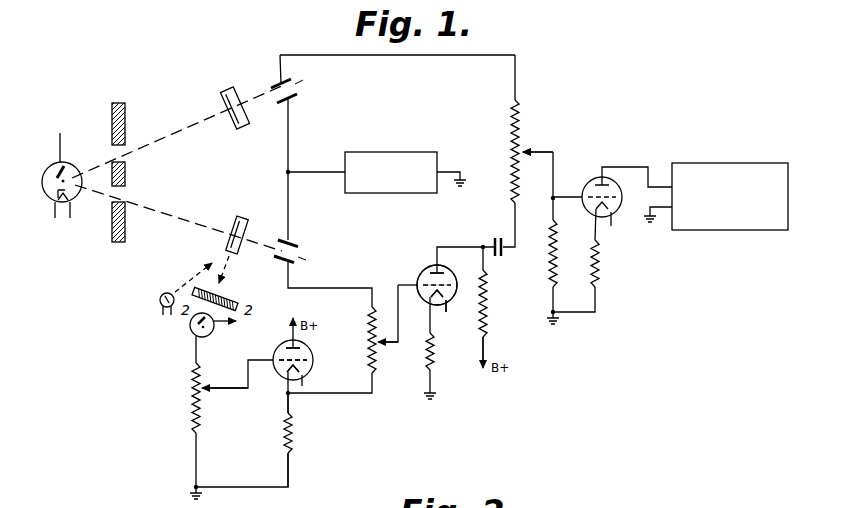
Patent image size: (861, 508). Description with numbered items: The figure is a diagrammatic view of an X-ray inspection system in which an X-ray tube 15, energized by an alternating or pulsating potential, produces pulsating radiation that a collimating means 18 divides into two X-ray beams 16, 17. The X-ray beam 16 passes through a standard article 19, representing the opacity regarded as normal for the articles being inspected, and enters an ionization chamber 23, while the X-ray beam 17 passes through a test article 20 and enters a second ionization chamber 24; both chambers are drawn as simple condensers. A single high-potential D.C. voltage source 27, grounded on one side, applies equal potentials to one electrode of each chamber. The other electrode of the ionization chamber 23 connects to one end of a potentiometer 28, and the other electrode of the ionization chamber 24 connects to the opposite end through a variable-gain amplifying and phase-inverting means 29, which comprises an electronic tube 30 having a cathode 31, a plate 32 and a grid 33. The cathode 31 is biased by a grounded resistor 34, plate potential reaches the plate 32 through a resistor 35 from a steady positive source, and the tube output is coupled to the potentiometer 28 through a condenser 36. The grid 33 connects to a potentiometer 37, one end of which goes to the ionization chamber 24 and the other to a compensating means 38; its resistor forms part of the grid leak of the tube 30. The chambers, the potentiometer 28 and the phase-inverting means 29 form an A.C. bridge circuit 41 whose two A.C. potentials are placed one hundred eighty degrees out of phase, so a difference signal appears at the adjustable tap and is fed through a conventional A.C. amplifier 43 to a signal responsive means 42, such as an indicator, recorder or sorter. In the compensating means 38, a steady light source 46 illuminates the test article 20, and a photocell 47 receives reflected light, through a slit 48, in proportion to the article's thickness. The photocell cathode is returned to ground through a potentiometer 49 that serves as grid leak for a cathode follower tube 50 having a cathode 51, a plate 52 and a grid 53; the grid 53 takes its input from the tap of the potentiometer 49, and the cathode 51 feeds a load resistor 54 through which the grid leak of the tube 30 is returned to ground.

The X-ray tube 15 is at (72, 170).
The X-ray beam 16 is at (174, 130).
The X-ray beam 17 is at (177, 212).
The collimating means 18 is at (117, 103).
The standard article 19 is at (231, 92).
The test article 20 is at (240, 220).
The ionization chamber 23 is at (292, 97).
The ionization chamber 24 is at (294, 242).
The voltage source 27 is at (417, 152).
The potentiometer 28 is at (516, 146).
The variable-gain amplifying and phase-inverting means 29 is at (426, 256).
The electronic tube 30 is at (421, 274).
The cathode 31 is at (425, 301).
The anode or plate 32 is at (447, 273).
The grid 33 is at (446, 301).
The resistor 34 is at (436, 356).
The resistor 35 is at (488, 302).
The condenser 36 is at (498, 238).
The potentiometer 37 is at (377, 353).
The compensating means 38 is at (302, 463).
The A. C. bridge circuit 41 is at (524, 92).
The signal responsive means 42 is at (713, 163).
The A. C. amplifier 43 is at (619, 160).
The steady light source 46 is at (160, 299).
The photocell 47 is at (193, 334).
The slit 48 is at (231, 291).
The potentiometer 49 is at (190, 398).
The cathode follower tube 50 is at (284, 373).
The cathode 51 is at (304, 371).
The plate 52 is at (302, 348).
The grid 53 is at (308, 360).
The load resistor 54 is at (293, 426).